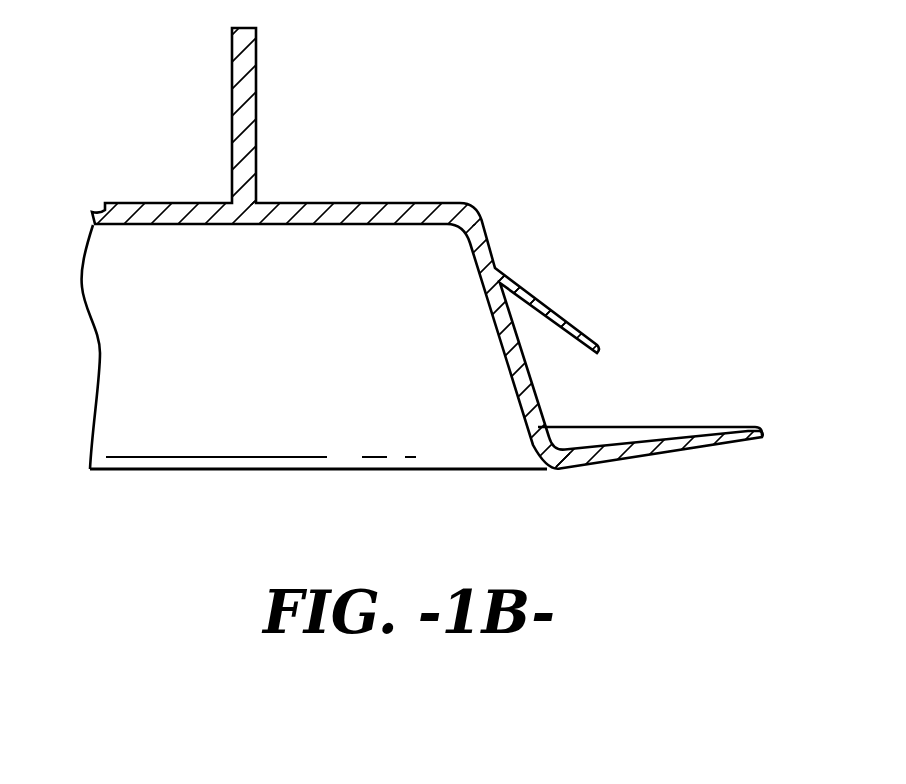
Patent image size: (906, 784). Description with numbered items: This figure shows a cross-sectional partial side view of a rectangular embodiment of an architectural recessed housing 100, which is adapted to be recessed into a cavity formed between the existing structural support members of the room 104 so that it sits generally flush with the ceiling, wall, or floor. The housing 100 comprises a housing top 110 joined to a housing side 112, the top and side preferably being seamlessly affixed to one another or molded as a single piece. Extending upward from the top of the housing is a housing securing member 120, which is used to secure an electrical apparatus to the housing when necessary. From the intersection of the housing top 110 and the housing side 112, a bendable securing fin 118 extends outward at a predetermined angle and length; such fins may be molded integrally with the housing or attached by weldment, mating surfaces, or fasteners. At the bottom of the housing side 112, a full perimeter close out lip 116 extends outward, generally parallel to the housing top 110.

The architectural recessed housing 100 is at (402, 138).
The housing top 110 is at (158, 202).
The housing securing member 120 is at (257, 97).
The housing side 112 is at (453, 392).
The existing structural support members of the room 104 is at (527, 392).
The bendable securing fin 118 is at (540, 278).
The full perimeter close out lip 116 is at (648, 458).